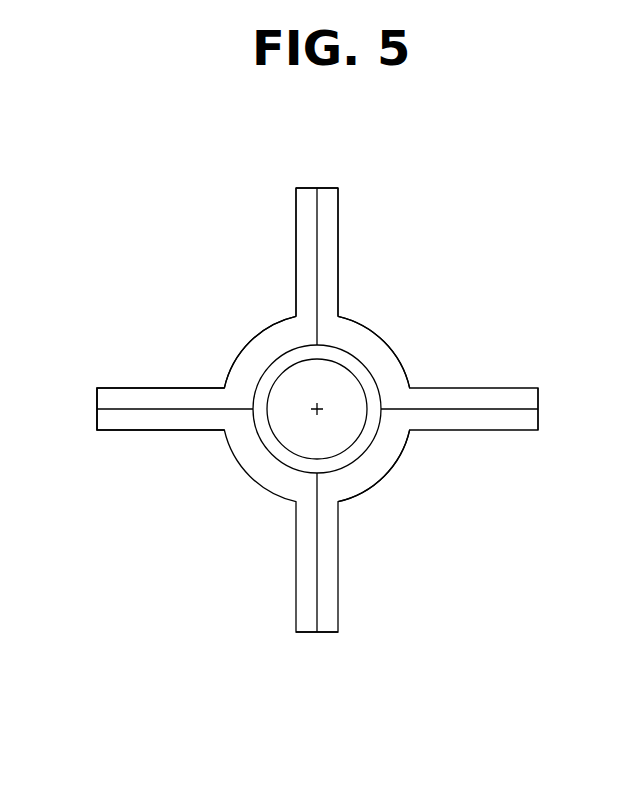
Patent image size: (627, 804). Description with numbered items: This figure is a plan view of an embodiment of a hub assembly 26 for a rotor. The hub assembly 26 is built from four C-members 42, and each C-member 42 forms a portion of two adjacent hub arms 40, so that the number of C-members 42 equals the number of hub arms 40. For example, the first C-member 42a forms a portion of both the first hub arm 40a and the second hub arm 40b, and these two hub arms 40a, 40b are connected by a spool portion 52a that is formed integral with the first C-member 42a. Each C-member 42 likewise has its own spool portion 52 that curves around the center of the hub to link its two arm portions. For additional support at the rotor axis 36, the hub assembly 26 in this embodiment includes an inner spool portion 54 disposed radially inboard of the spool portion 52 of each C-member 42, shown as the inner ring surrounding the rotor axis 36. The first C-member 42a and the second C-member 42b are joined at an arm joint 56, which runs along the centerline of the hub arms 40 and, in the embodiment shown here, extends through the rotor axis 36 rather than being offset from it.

The hub assembly 26 is at (197, 231).
The rotor axis 36 is at (317, 415).
The hub arms 40 is at (91, 407).
The first hub arm 40a is at (320, 177).
The second hub arm 40b is at (546, 407).
The C-members 42 is at (195, 387).
The first C-member 42a is at (336, 210).
The second C-member 42b is at (302, 210).
The spool portion 52 is at (247, 345).
The spool portion of first C-member 52a is at (377, 340).
The inner spool portion 54 is at (373, 442).
The arm joint 56 is at (317, 272).